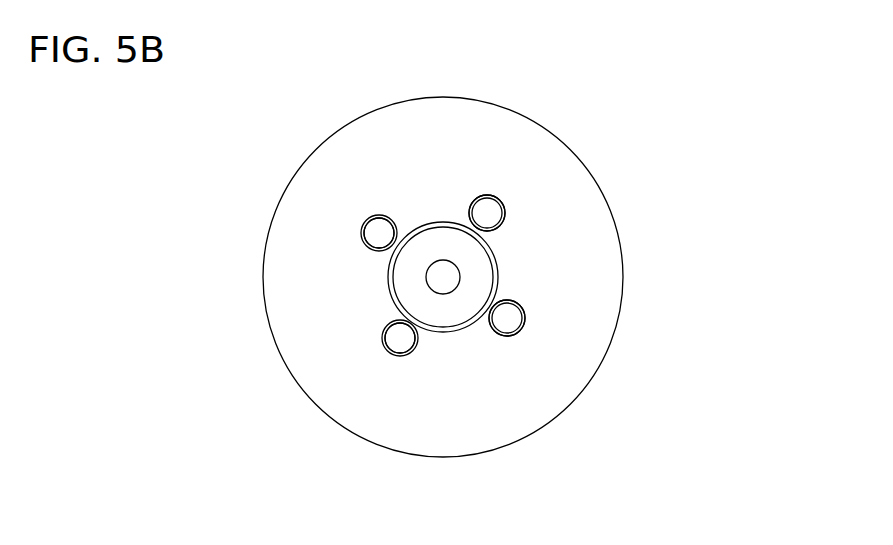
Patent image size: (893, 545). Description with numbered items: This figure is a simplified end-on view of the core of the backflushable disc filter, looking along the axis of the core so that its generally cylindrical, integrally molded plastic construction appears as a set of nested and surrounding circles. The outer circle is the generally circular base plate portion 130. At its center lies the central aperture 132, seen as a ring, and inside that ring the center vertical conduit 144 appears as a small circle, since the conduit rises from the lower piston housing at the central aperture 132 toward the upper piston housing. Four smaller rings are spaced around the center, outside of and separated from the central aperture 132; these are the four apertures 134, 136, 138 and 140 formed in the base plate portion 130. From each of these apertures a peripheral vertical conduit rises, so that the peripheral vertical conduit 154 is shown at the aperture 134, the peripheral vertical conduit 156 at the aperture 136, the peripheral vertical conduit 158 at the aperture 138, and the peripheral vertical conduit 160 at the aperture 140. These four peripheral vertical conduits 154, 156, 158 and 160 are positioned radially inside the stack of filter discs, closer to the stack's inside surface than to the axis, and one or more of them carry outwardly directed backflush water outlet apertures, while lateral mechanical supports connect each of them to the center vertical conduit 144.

The base plate portion 130 is at (533, 175).
The central aperture 132 is at (410, 278).
The center vertical conduit 144 is at (460, 273).
The aperture 134 is at (485, 205).
The aperture 136 is at (371, 234).
The aperture 138 is at (400, 345).
The aperture 140 is at (510, 317).
The peripheral vertical conduit 154 is at (507, 208).
The peripheral vertical conduit 156 is at (380, 215).
The peripheral vertical conduit 158 is at (382, 338).
The peripheral vertical conduit 160 is at (522, 333).